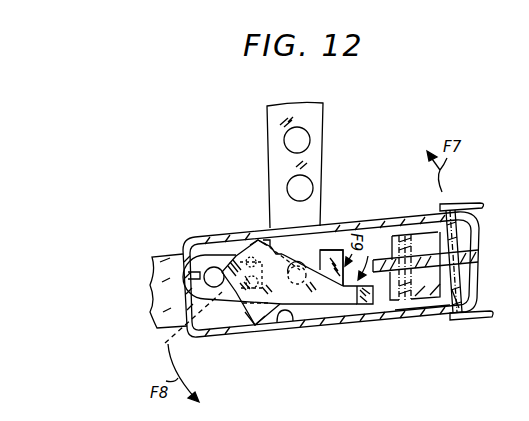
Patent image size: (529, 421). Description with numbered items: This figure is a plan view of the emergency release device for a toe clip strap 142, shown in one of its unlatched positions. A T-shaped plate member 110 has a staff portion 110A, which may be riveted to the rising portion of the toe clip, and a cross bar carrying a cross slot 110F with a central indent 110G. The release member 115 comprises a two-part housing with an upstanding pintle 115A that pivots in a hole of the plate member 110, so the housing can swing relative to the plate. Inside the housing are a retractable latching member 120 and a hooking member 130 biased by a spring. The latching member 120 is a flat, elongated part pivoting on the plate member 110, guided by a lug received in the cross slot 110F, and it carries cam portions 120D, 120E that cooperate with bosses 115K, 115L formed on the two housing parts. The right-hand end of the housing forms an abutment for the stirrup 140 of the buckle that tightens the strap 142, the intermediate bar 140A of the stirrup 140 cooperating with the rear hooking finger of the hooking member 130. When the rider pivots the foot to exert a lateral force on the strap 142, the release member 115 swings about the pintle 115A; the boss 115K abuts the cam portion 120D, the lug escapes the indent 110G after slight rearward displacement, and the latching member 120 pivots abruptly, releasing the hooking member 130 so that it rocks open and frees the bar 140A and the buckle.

The plate member 110 is at (323, 127).
The staff portion 110A is at (318, 164).
The cross slot 110F is at (206, 270).
The central indent 110G is at (170, 327).
The release member 115 is at (213, 233).
The pintle 115A is at (330, 250).
The boss 115K is at (263, 235).
The boss 115L is at (287, 315).
The retractable latching member 120 is at (233, 309).
The cam portion 120D is at (258, 240).
The cam portion 120E is at (255, 325).
The hooking member 130 is at (382, 261).
The stirrup 140 is at (474, 322).
The bar 140A is at (452, 303).
The strap 142 is at (162, 262).